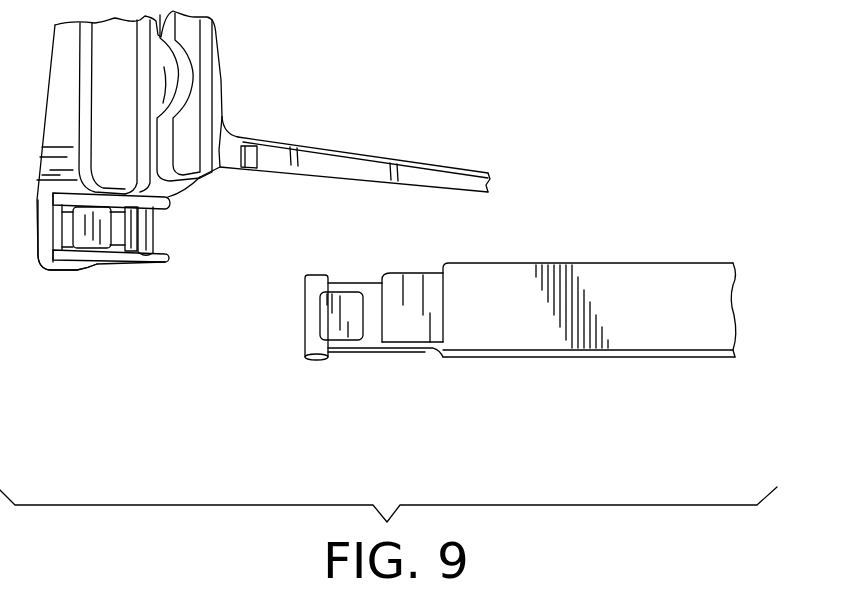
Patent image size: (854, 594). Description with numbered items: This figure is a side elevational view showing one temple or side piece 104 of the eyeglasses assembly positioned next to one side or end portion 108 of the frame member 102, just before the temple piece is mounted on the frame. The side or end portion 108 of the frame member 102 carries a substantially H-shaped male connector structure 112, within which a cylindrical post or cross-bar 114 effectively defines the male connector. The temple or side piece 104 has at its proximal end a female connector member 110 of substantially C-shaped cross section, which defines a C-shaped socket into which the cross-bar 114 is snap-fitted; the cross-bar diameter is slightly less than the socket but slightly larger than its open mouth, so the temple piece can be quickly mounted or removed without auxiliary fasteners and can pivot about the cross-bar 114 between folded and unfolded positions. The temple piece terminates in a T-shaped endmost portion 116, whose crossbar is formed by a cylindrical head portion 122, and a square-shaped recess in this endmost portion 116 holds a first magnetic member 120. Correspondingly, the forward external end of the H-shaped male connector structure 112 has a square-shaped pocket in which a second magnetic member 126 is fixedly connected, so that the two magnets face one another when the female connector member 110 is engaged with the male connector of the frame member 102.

The frame member 102 is at (220, 143).
The temple or side piece 104 is at (580, 328).
The side or end portion 108 is at (43, 273).
The female connector member 110 is at (405, 276).
The H-shaped male connector structure 112 is at (168, 261).
The cylindrical post or cross-bar 114 is at (153, 230).
The T-shaped endmost portion 116 is at (305, 312).
The first magnetic member 120 is at (348, 335).
The cylindrical head portion 122 is at (310, 363).
The second magnetic member 126 is at (98, 235).